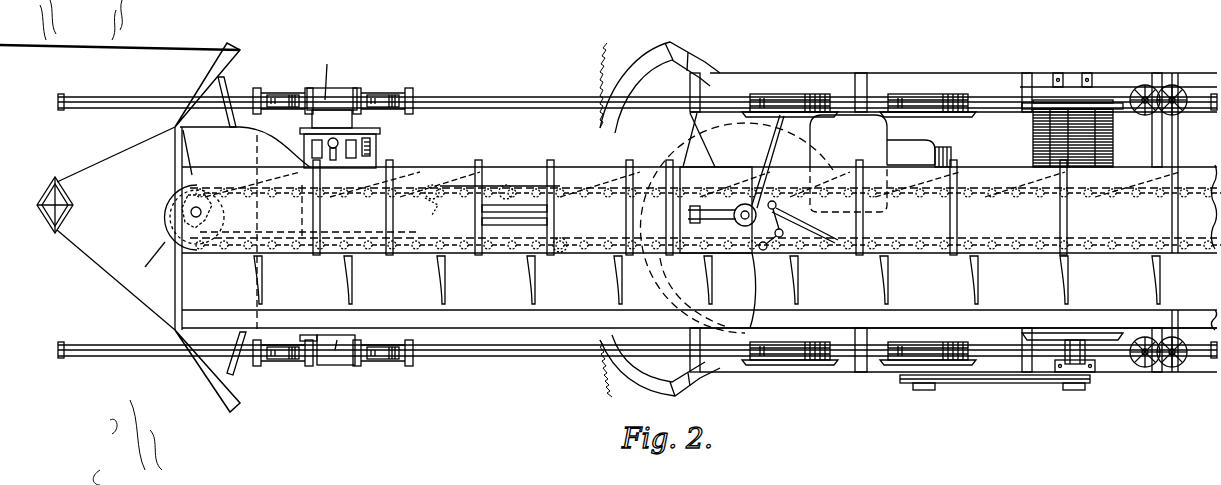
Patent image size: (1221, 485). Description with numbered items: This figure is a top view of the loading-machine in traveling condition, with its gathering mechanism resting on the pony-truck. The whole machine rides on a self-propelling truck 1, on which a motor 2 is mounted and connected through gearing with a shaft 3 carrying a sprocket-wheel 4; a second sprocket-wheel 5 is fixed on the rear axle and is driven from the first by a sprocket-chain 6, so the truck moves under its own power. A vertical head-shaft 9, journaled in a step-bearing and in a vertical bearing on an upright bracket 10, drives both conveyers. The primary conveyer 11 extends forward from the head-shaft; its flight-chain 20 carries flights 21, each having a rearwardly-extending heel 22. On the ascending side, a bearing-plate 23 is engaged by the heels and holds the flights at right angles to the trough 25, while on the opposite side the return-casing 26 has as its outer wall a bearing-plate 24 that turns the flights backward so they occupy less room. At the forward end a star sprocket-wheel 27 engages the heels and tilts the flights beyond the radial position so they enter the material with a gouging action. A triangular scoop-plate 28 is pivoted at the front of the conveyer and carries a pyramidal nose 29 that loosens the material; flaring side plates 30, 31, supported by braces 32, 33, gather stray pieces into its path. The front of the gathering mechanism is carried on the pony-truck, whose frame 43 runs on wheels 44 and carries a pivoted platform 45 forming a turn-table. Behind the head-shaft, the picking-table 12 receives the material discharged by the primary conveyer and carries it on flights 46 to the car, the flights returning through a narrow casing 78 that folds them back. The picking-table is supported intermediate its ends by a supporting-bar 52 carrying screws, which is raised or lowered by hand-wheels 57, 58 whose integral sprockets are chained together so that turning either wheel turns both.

The self-propelling truck 1 is at (878, 82).
The motor 2 is at (880, 163).
The shaft 3 is at (1088, 350).
The sprocket-wheel 4 is at (1074, 391).
The sprocket-wheel 5 is at (924, 391).
The sprocket-chain 6 is at (996, 384).
The head-shaft 9 is at (772, 198).
The bracket 10 is at (716, 219).
The primary conveyer 11 is at (470, 190).
The picking-table 12 is at (1108, 240).
The flight-chain 20 is at (505, 188).
The flights 21 is at (470, 170).
The heel 22 is at (428, 188).
The bearing-plate 23 is at (566, 238).
The bearing-plate 24 is at (492, 165).
The trough 25 is at (681, 228).
The return-casing 26 is at (300, 228).
The star sprocket-wheel 27 is at (200, 205).
The scoop-plate 28 is at (116, 228).
The nose 29 is at (56, 178).
The side plate 30 is at (235, 50).
The side plate 31 is at (236, 406).
The brace 32 is at (226, 84).
The brace 33 is at (233, 365).
The frame 43 is at (340, 93).
The wheels 44 is at (285, 100).
The platform 45 is at (330, 219).
The flights 46 is at (1158, 281).
The supporting-bar 52 is at (1156, 72).
The hand-wheel 57 is at (1180, 362).
The hand-wheel 58 is at (1176, 84).
The casing 78 is at (972, 190).